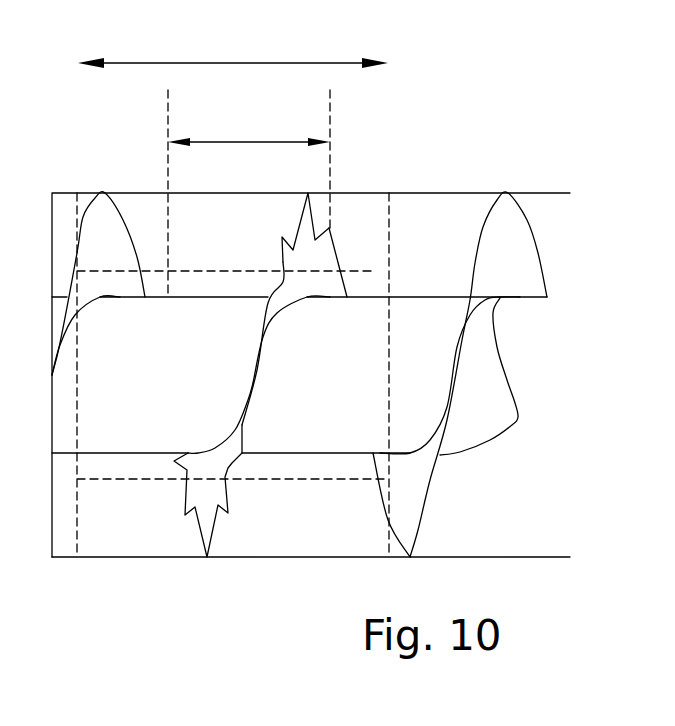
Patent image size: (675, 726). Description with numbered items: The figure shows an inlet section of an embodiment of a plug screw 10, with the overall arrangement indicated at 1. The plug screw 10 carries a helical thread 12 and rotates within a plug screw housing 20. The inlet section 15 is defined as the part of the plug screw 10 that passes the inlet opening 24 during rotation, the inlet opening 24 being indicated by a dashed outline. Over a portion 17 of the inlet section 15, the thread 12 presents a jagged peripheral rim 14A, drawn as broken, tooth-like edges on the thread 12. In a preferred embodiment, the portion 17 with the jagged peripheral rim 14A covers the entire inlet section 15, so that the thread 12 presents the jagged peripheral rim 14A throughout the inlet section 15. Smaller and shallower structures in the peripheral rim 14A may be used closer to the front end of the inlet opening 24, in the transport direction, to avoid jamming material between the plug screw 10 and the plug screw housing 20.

The screw conveyor 1 is at (117, 588).
The plug screw 10 is at (493, 405).
The thread 12 is at (500, 215).
The jagged peripheral rim 14A is at (281, 240).
The inlet section 15 is at (233, 52).
The portion 17 is at (249, 130).
The plug screw housing 20 is at (550, 557).
The inlet opening 24 is at (365, 271).